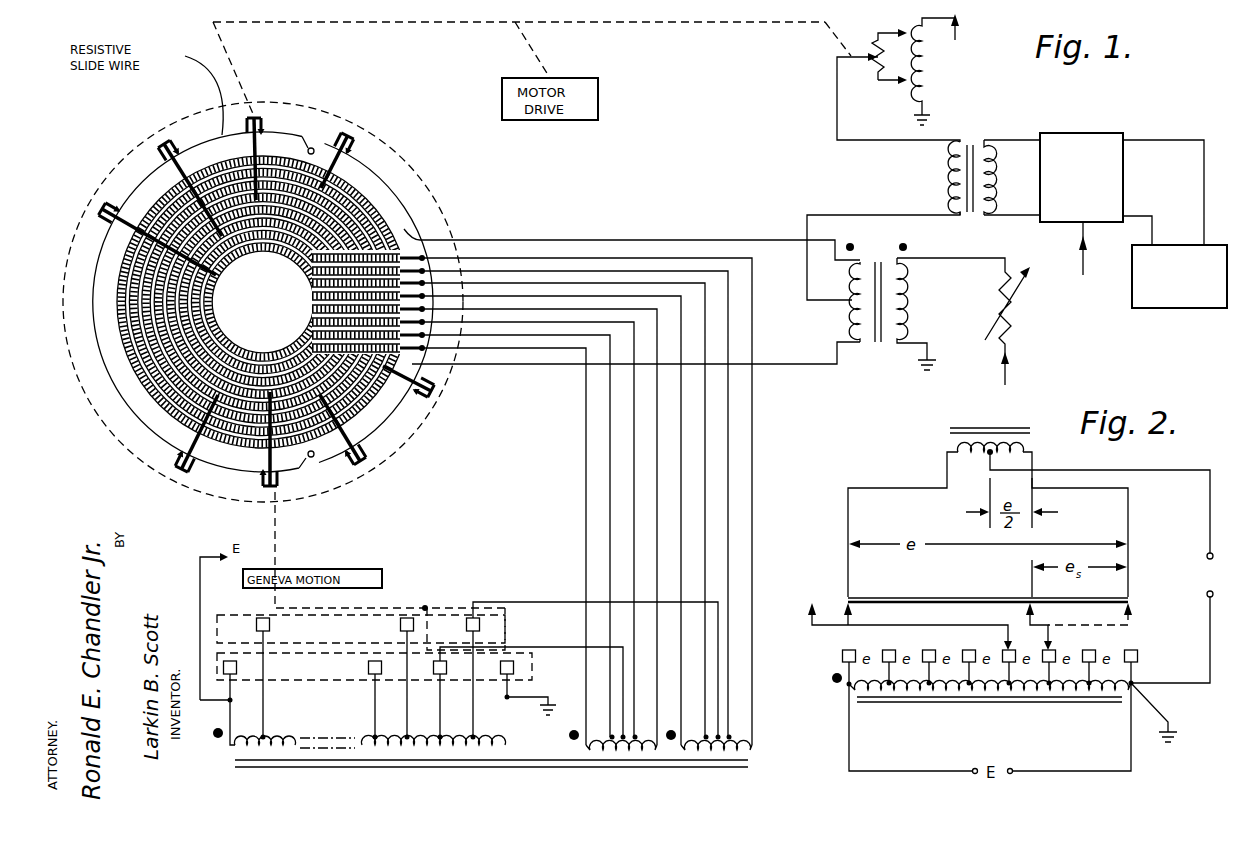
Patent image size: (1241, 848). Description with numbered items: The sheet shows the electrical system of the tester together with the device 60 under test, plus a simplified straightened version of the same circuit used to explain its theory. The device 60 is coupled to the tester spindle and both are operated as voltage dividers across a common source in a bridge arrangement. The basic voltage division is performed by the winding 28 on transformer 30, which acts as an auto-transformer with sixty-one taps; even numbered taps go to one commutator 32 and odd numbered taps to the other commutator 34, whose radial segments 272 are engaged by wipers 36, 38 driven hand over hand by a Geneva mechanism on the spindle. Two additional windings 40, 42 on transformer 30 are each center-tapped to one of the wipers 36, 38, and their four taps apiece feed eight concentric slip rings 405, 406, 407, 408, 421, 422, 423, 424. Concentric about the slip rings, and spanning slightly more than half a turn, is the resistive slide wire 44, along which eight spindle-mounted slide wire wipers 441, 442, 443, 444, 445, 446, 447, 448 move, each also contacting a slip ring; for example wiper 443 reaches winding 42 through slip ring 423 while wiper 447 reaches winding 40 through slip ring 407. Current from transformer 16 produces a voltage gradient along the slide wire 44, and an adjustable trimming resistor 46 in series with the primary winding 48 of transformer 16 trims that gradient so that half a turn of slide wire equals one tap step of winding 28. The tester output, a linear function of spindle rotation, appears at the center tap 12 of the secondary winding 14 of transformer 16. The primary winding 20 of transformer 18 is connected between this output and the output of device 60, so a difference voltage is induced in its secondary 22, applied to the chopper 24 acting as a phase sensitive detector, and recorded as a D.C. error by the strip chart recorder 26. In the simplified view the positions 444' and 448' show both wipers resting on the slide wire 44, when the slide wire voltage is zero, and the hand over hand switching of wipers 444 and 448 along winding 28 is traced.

In FIG. 1, the center tap 12 is at (848, 310).
In FIG. 2, the center tap 12 is at (995, 455).
In FIG. 1, the secondary winding 14 is at (860, 350).
In FIG. 2, the secondary winding 14 is at (960, 452).
In FIG. 1, the transformer 16 is at (887, 352).
In FIG. 2, the transformer 16 is at (942, 433).
In FIG. 1, the transformer 18 is at (958, 159).
In FIG. 1, the primary winding of transformer 18 20 is at (948, 188).
In FIG. 1, the secondary 22 is at (997, 172).
In FIG. 1, the chopper 24 is at (1105, 133).
In FIG. 1, the strip chart recorder 26 is at (1197, 300).
In FIG. 1, the winding 28 is at (288, 742).
In FIG. 2, the winding 28 is at (920, 690).
In FIG. 1, the transformer 30 is at (742, 770).
In FIG. 2, the transformer 30 is at (840, 694).
In FIG. 1, the commutator 32 is at (351, 622).
In FIG. 1, the commutator 34 is at (245, 614).
In FIG. 1, the wiper 36 is at (443, 653).
In FIG. 1, the wiper 38 is at (478, 612).
In FIG. 1, the winding 40 is at (610, 756).
In FIG. 1, the winding 42 is at (715, 756).
In FIG. 1, the resistive slide wire 44 is at (147, 166).
In FIG. 2, the resistive slide wire 44 is at (928, 597).
In FIG. 1, the adjustable trimming resistor 46 is at (1012, 316).
In FIG. 1, the primary winding 48 is at (903, 302).
In FIG. 1, the device to be tested 60 is at (948, 57).
In FIG. 1, the radial segments 272 is at (225, 676).
In FIG. 1, the slip ring 405 is at (205, 322).
In FIG. 1, the slip ring 406 is at (215, 338).
In FIG. 1, the slip ring 407 is at (226, 352).
In FIG. 1, the slip ring 408 is at (240, 368).
In FIG. 1, the slip ring 421 is at (366, 176).
In FIG. 1, the slip ring 422 is at (370, 200).
In FIG. 1, the slip ring 423 is at (390, 213).
In FIG. 1, the slip ring 424 is at (407, 232).
In FIG. 1, the slide wire wiper 441 is at (436, 404).
In FIG. 1, the slide wire wiper 442 is at (383, 457).
In FIG. 1, the slide wire wiper 443 is at (283, 483).
In FIG. 1, the slide wire wiper 444 is at (203, 463).
In FIG. 2, the slide wire wiper 444 is at (1006, 626).
In FIG. 2, the wiper position 444' is at (1117, 623).
In FIG. 1, the slide wire wiper 445 is at (100, 203).
In FIG. 1, the slide wire wiper 446 is at (160, 128).
In FIG. 1, the slide wire wiper 447 is at (262, 112).
In FIG. 1, the slide wire wiper 448 is at (373, 143).
In FIG. 2, the slide wire wiper 448 is at (897, 634).
In FIG. 2, the wiper position 448' is at (819, 597).